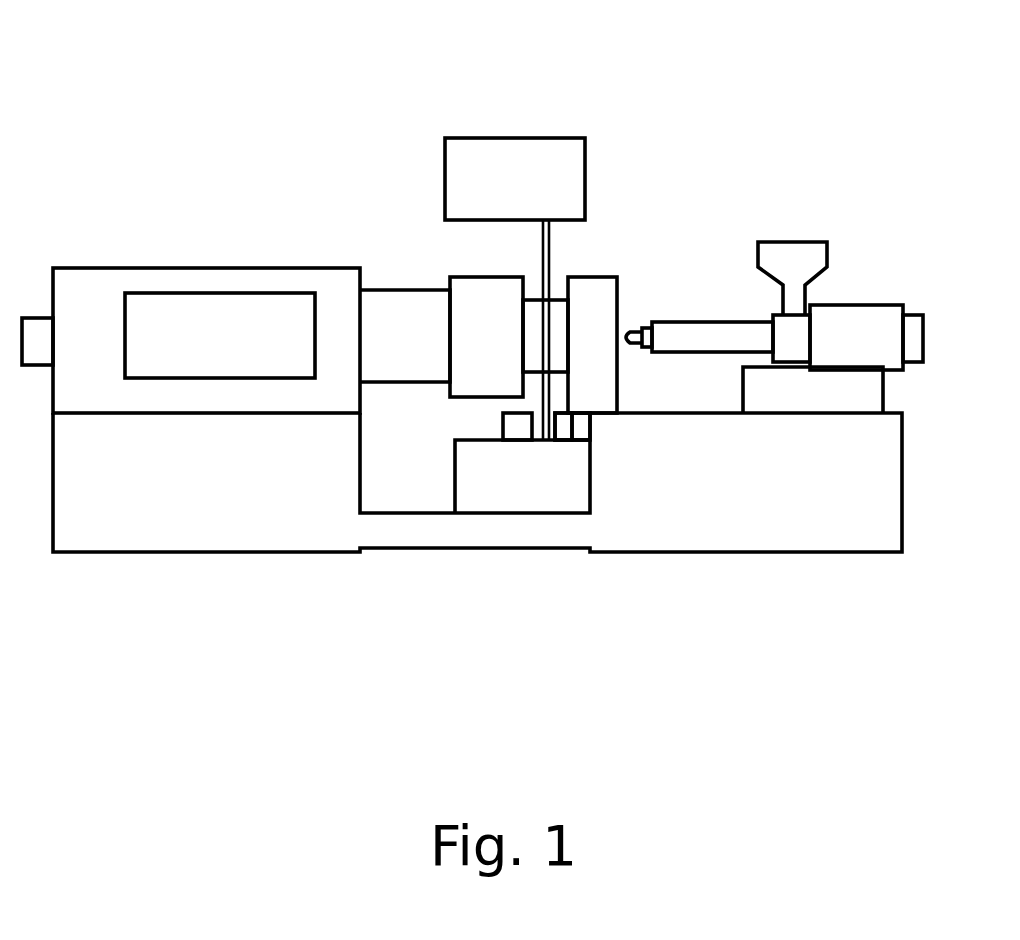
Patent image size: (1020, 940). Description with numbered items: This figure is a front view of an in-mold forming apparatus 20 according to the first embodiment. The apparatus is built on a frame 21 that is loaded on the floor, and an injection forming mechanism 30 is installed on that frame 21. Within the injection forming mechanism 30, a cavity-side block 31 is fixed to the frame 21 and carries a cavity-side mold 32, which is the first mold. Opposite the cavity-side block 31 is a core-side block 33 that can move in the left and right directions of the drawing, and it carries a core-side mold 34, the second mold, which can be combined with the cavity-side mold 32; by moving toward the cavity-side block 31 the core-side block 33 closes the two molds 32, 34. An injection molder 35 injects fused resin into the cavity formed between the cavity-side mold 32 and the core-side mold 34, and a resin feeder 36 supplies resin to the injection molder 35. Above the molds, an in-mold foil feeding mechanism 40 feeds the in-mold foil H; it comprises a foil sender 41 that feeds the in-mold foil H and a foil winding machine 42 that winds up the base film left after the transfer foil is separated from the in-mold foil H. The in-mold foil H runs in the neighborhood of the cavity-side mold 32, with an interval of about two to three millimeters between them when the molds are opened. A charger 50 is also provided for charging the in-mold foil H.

The in-mold forming apparatus 20 is at (472, 352).
The frame 21 is at (745, 540).
The injection forming mechanism 30 is at (181, 268).
The cavity-side block 31 is at (448, 337).
The cavity-side mold 32 is at (533, 333).
The core-side block 33 is at (602, 280).
The core-side mold 34 is at (552, 308).
The injection molder 35 is at (872, 312).
The resin feeder 36 is at (790, 270).
The in-mold foil feeding mechanism 40 is at (527, 231).
The foil sender 41 is at (467, 145).
The in-mold foil H is at (543, 246).
The foil winding machine 42 is at (550, 495).
The charger 50 is at (503, 425).